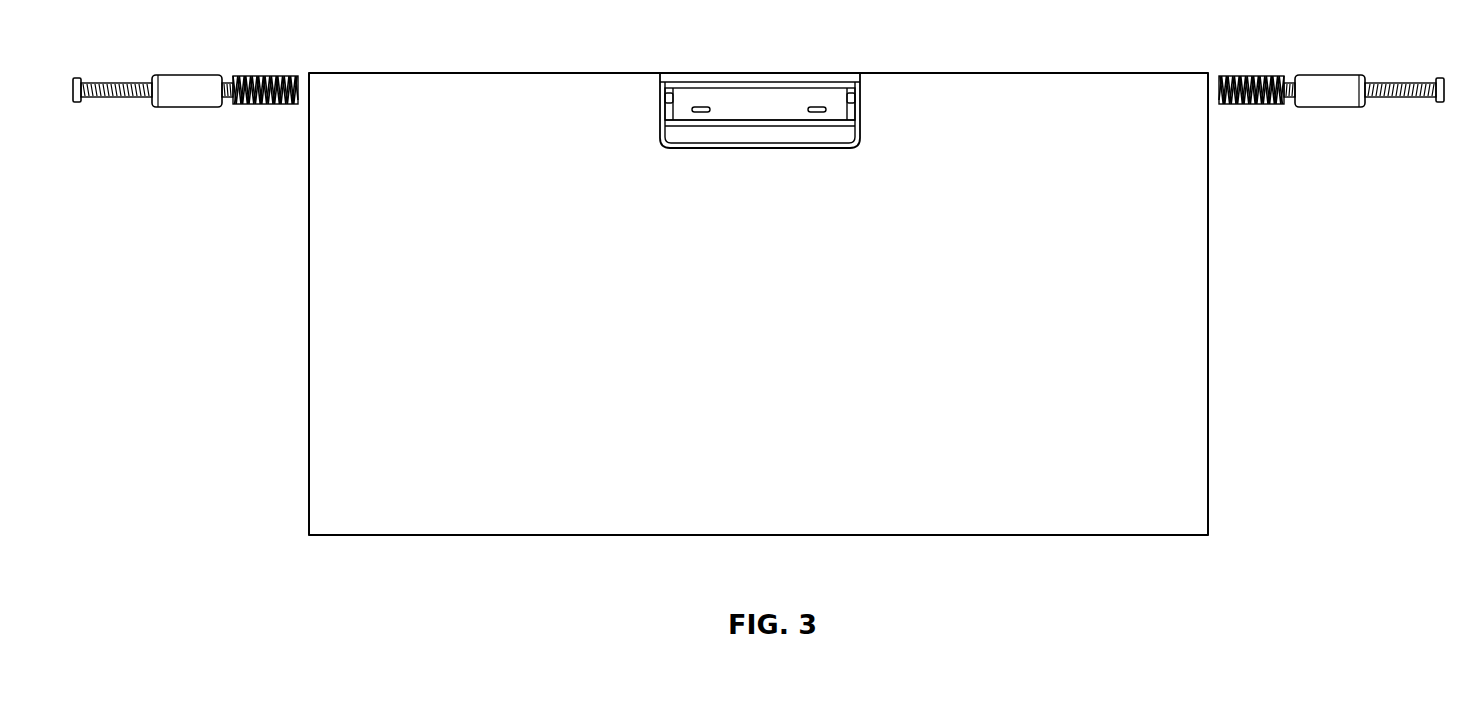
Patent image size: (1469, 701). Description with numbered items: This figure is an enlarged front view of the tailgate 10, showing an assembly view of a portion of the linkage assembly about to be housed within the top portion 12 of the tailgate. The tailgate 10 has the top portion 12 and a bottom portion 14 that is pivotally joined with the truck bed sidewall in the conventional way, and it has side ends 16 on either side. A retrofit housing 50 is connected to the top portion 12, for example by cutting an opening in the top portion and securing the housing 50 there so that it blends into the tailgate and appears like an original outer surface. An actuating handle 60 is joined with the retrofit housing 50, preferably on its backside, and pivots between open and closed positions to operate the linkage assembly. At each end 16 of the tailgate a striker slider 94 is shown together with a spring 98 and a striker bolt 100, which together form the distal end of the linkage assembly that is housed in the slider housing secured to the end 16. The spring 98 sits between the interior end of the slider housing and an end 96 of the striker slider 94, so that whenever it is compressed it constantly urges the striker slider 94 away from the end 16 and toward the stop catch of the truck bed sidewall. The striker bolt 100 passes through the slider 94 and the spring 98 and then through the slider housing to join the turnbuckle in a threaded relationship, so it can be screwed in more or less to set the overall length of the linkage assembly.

The tailgate 10 is at (1168, 306).
The top portion 12 is at (455, 73).
The bottom portion 14 is at (548, 536).
The end 16 is at (308, 303).
The retrofit housing 50 is at (642, 102).
The actuating handle 60 is at (752, 100).
The striker slider 94 is at (188, 74).
The end of the striker slider 96 is at (232, 76).
The spring 98 is at (267, 103).
The striker bolt 100 is at (112, 97).